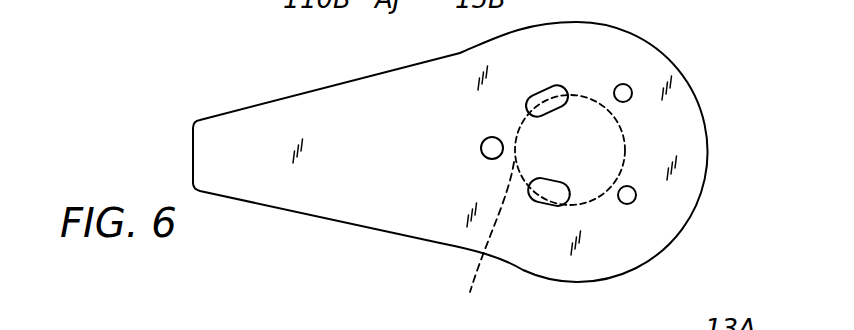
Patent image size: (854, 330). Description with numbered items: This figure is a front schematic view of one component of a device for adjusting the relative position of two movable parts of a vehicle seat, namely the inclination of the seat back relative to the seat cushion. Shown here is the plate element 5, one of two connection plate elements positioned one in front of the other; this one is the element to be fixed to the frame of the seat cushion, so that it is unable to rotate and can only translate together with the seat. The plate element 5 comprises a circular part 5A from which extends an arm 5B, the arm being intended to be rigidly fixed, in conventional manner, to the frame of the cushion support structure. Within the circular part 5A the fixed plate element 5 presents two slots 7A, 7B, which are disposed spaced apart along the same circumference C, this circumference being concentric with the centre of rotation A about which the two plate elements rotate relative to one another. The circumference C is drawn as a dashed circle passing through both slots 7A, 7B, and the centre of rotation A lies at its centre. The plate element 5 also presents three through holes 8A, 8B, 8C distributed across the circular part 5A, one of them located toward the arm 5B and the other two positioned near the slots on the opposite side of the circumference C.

The plate element 5 is at (667, 78).
The circular part 5A is at (665, 242).
The arm 5B is at (278, 183).
The slot 7A is at (540, 88).
The slot 7B is at (550, 178).
The through hole 8A is at (485, 158).
The through hole 8B is at (636, 196).
The through hole 8C is at (627, 85).
The centre of rotation A is at (570, 148).
The circumference C is at (547, 203).